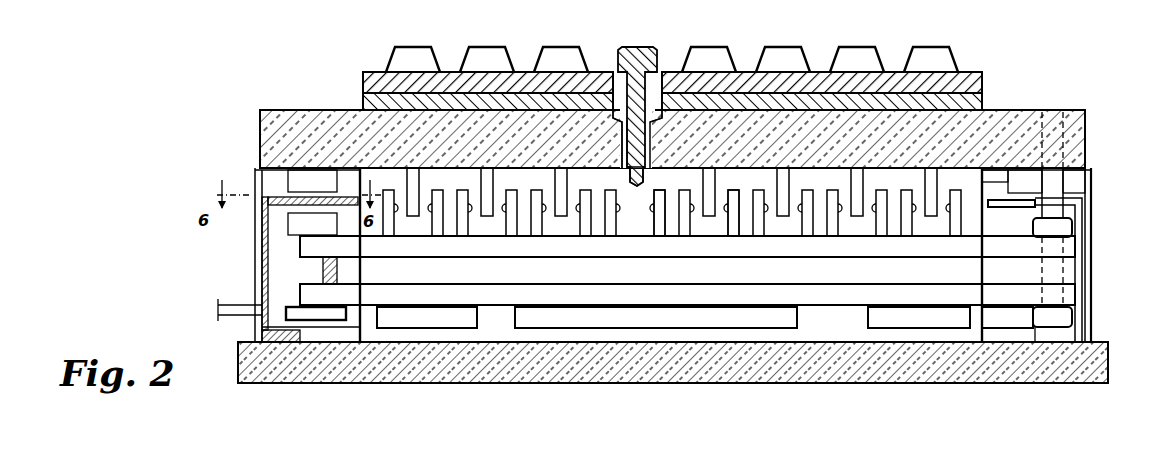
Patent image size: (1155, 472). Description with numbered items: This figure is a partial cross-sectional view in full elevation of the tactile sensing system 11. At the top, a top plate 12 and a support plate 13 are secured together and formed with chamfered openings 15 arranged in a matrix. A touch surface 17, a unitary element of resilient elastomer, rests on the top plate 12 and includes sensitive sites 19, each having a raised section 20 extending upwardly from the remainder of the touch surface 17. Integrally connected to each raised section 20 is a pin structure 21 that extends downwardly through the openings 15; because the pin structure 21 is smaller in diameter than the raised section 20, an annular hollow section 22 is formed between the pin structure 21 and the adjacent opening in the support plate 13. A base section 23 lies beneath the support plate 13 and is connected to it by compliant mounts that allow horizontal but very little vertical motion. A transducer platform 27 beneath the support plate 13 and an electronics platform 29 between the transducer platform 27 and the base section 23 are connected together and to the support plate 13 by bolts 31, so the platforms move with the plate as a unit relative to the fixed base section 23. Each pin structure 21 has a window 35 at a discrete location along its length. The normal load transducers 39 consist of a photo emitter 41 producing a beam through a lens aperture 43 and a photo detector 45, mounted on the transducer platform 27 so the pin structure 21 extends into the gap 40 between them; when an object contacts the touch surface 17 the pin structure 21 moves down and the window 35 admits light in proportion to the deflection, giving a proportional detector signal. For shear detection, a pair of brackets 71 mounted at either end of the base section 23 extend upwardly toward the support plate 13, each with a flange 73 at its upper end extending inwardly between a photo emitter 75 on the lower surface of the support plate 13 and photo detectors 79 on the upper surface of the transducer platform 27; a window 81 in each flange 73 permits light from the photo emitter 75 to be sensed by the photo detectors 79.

The tactile sensing system 11 is at (226, 50).
The top plate 12 is at (984, 102).
The support plate 13 is at (1087, 130).
The chamfered openings 15 is at (648, 155).
The touch surface 17 is at (996, 62).
The sensitive sites 19 is at (669, 98).
The raised section 20 is at (637, 47).
The pin structure 21 is at (626, 150).
The annular hollow section 22 is at (660, 113).
The base section 23 is at (238, 346).
The transducer platform 27 is at (1055, 246).
The electronics platform 29 is at (1055, 297).
The bolts 31 is at (1060, 187).
The window 35 is at (645, 184).
The transducers 39 is at (496, 244).
The gap 40 is at (672, 236).
The photo emitter 41 is at (686, 214).
The lens aperture 43 is at (683, 239).
The photo detector 45 is at (735, 230).
The brackets 71 is at (268, 278).
The flange 73 is at (259, 163).
The photo emitter 75 is at (312, 176).
The photo detectors 79 is at (298, 226).
The window 81 is at (284, 204).